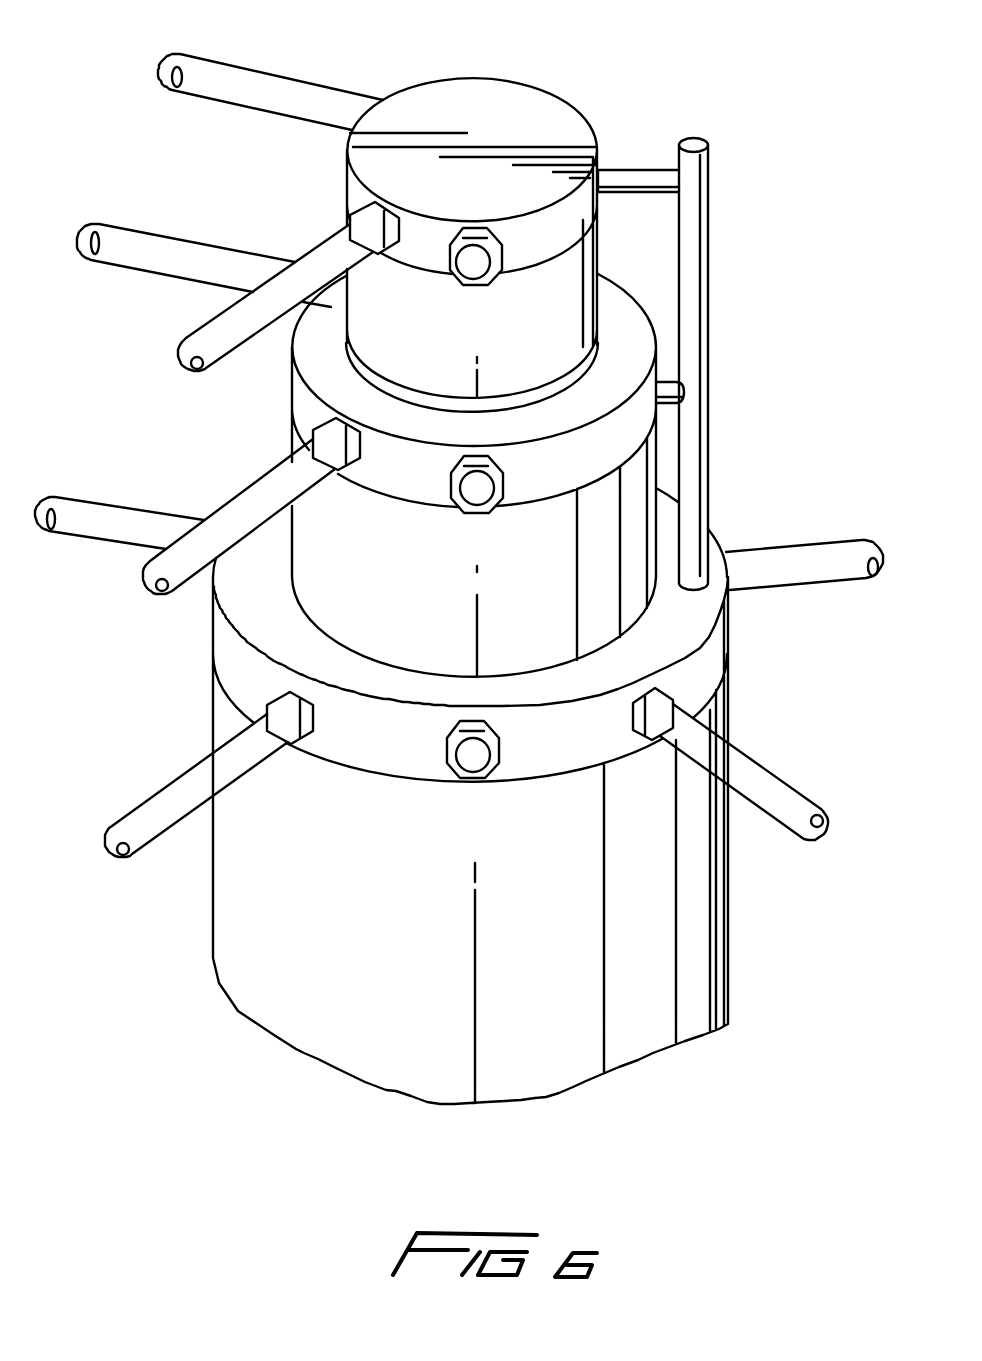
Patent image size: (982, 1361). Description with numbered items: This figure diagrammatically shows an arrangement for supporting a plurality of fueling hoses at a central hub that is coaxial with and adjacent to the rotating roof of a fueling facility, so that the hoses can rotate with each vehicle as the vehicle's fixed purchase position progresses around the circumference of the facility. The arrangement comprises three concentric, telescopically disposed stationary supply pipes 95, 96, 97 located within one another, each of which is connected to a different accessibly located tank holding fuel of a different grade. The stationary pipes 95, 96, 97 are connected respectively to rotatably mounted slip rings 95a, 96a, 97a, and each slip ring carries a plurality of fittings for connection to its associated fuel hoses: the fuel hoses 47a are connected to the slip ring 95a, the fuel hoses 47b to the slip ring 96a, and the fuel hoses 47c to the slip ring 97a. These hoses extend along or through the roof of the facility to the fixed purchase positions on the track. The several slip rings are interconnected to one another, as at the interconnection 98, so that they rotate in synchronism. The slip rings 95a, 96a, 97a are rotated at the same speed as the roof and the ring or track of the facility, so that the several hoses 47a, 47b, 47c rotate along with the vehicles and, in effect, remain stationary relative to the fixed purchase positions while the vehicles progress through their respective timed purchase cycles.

The fuel hoses 47a is at (293, 92).
The fuel hoses 47b is at (207, 257).
The fuel hoses 47c is at (188, 787).
The stationary supply pipe 95 is at (495, 341).
The slip ring 95a is at (527, 240).
The stationary supply pipe 96 is at (493, 550).
The slip ring 96a is at (527, 468).
The stationary supply pipe 97 is at (421, 929).
The slip ring 97a is at (538, 748).
The interconnection 98 is at (700, 398).